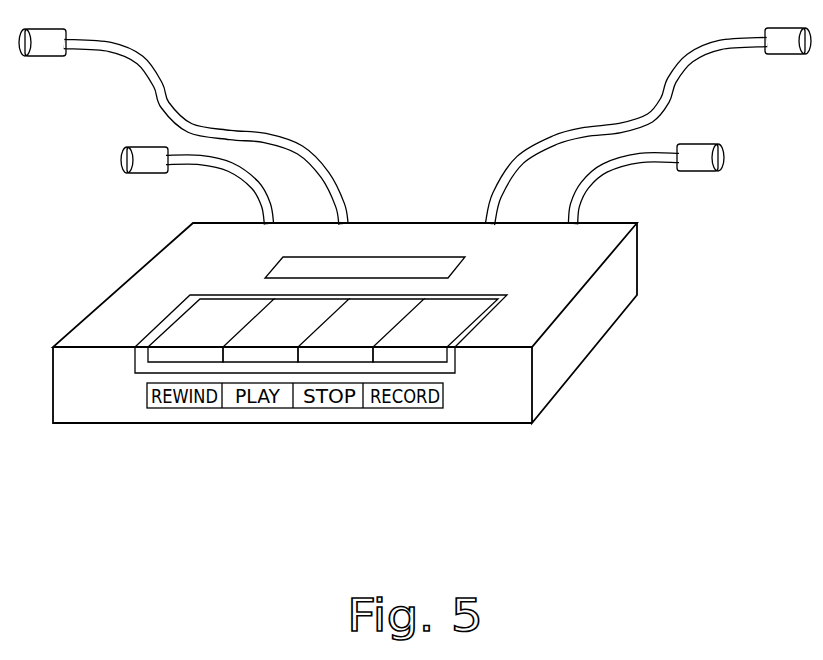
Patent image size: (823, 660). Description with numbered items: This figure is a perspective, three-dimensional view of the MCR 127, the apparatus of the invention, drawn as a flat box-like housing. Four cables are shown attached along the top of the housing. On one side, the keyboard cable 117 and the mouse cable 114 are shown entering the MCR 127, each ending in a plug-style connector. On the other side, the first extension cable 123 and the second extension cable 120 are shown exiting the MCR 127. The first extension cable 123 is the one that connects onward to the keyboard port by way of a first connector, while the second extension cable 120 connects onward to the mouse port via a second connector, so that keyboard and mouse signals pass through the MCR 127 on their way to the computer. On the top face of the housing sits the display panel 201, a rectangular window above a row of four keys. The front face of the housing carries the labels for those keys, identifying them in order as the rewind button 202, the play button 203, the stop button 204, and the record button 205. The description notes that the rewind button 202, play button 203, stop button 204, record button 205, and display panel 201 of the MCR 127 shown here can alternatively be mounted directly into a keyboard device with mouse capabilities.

The mouse cable 114 is at (198, 168).
The keyboard cable 117 is at (125, 60).
The second extension cable 120 is at (645, 167).
The first extension cable 123 is at (702, 62).
The MCR 127 is at (557, 267).
The display panel 201 is at (360, 268).
The rewind button 202 is at (185, 408).
The play button 203 is at (263, 408).
The stop button 204 is at (325, 408).
The record button 205 is at (400, 408).